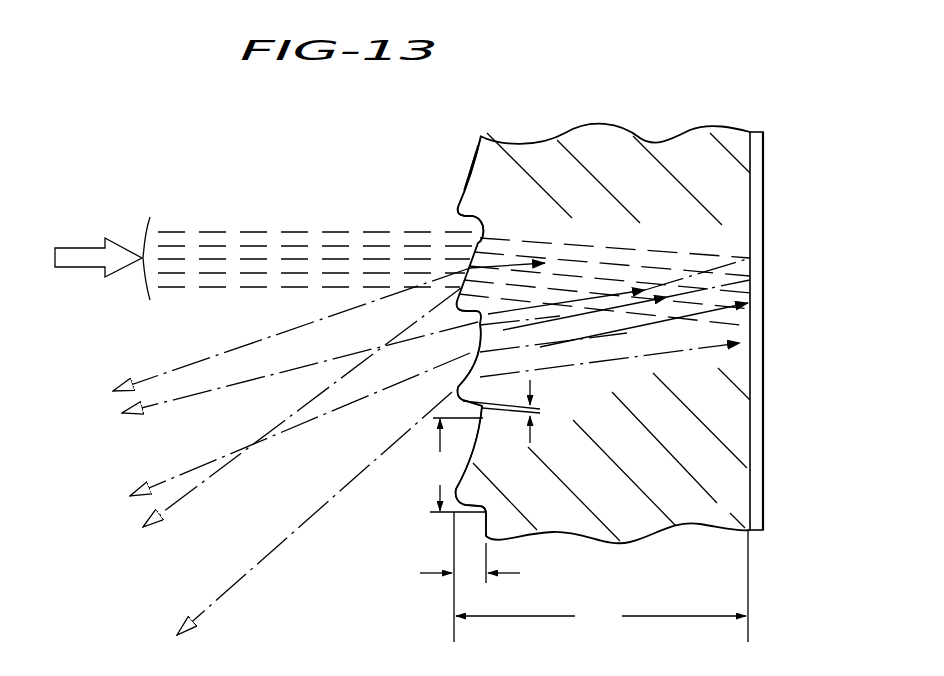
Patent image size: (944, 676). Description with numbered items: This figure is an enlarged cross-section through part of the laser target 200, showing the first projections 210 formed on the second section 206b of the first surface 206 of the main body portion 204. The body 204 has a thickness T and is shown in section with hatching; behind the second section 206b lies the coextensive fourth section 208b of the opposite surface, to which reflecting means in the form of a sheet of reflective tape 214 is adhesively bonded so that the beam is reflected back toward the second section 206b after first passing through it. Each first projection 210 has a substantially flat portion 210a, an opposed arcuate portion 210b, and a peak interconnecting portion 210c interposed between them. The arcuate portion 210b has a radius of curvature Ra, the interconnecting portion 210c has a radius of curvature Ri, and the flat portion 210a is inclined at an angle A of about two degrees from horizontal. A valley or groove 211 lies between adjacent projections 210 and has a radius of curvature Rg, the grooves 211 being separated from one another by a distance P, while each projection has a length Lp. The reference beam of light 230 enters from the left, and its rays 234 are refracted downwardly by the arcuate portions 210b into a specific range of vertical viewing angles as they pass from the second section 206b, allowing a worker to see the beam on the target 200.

The laser target 200 is at (736, 106).
The main body portion 204 is at (633, 153).
The first surface 206 is at (477, 142).
The second section 206b is at (438, 527).
The fourth section 208b is at (763, 490).
The first projections 210 is at (462, 394).
The flat portion 210a is at (470, 217).
The arcuate portion 210b is at (460, 195).
The peak interconnecting portion 210c is at (458, 210).
The groove 211 is at (466, 311).
The reflective tape 214 is at (761, 207).
The beam of light 230 is at (85, 247).
The rays 234 is at (172, 479).
The radius of curvature of the arcuate portion Ra is at (473, 159).
The radius of curvature of the interconnecting portion Ri is at (463, 206).
The radius of curvature of the groove Rg is at (485, 235).
The angle of inclination A is at (513, 411).
The groove spacing distance P is at (455, 465).
The projection length Lp is at (487, 567).
The thickness T is at (601, 577).